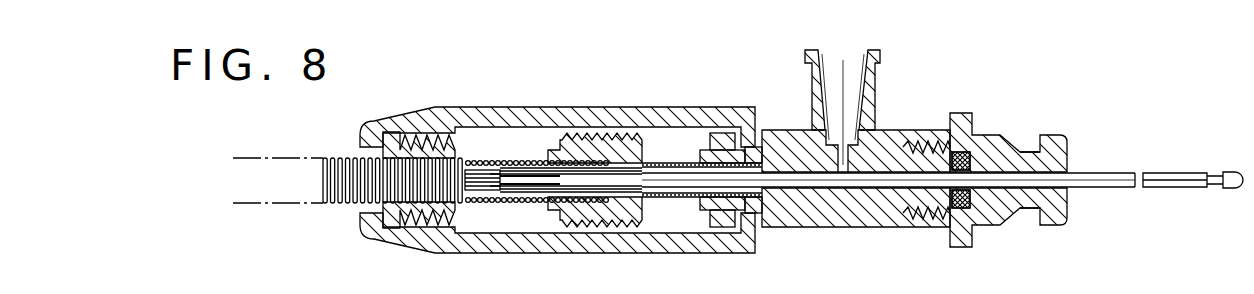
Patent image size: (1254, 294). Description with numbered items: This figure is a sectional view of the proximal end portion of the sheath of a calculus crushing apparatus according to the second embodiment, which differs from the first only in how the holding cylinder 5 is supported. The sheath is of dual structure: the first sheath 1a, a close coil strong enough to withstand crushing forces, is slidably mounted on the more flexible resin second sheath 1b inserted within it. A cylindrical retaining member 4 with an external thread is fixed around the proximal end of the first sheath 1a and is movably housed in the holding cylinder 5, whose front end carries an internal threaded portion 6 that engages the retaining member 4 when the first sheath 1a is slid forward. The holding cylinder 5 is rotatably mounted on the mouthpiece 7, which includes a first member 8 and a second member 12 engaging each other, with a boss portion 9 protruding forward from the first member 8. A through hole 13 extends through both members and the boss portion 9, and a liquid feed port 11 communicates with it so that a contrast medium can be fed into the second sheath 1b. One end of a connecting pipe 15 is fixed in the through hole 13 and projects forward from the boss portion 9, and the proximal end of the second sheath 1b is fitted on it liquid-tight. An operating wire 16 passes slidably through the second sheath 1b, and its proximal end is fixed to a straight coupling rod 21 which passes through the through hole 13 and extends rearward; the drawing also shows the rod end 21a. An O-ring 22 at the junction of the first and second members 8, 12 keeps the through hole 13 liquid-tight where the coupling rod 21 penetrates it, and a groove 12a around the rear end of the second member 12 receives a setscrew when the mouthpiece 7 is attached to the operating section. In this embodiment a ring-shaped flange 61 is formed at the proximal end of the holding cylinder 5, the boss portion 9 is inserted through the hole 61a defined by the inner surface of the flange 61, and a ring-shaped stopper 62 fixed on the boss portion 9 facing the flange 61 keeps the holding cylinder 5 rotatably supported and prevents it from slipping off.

The first sheath 1a is at (331, 205).
The second sheath 1b is at (483, 191).
The retaining member 4 is at (601, 222).
The holding cylinder 5 is at (606, 110).
The internal threaded portion 6 is at (425, 137).
The mouthpiece 7 is at (925, 229).
The first member 8 is at (860, 226).
The boss portion 9 is at (757, 198).
The liquid feed port 11 is at (860, 50).
The second member 12 is at (990, 223).
The groove 12a is at (1020, 207).
The through hole 13 is at (813, 184).
The connecting pipe 15 is at (673, 198).
The operating wire 16 is at (537, 190).
The coupling rod 21 is at (1110, 188).
The rod end bulb 21a is at (1218, 190).
The O-ring 22 is at (968, 158).
The flange 61 is at (752, 137).
The hole 61a is at (745, 160).
The stopper 62 is at (725, 228).